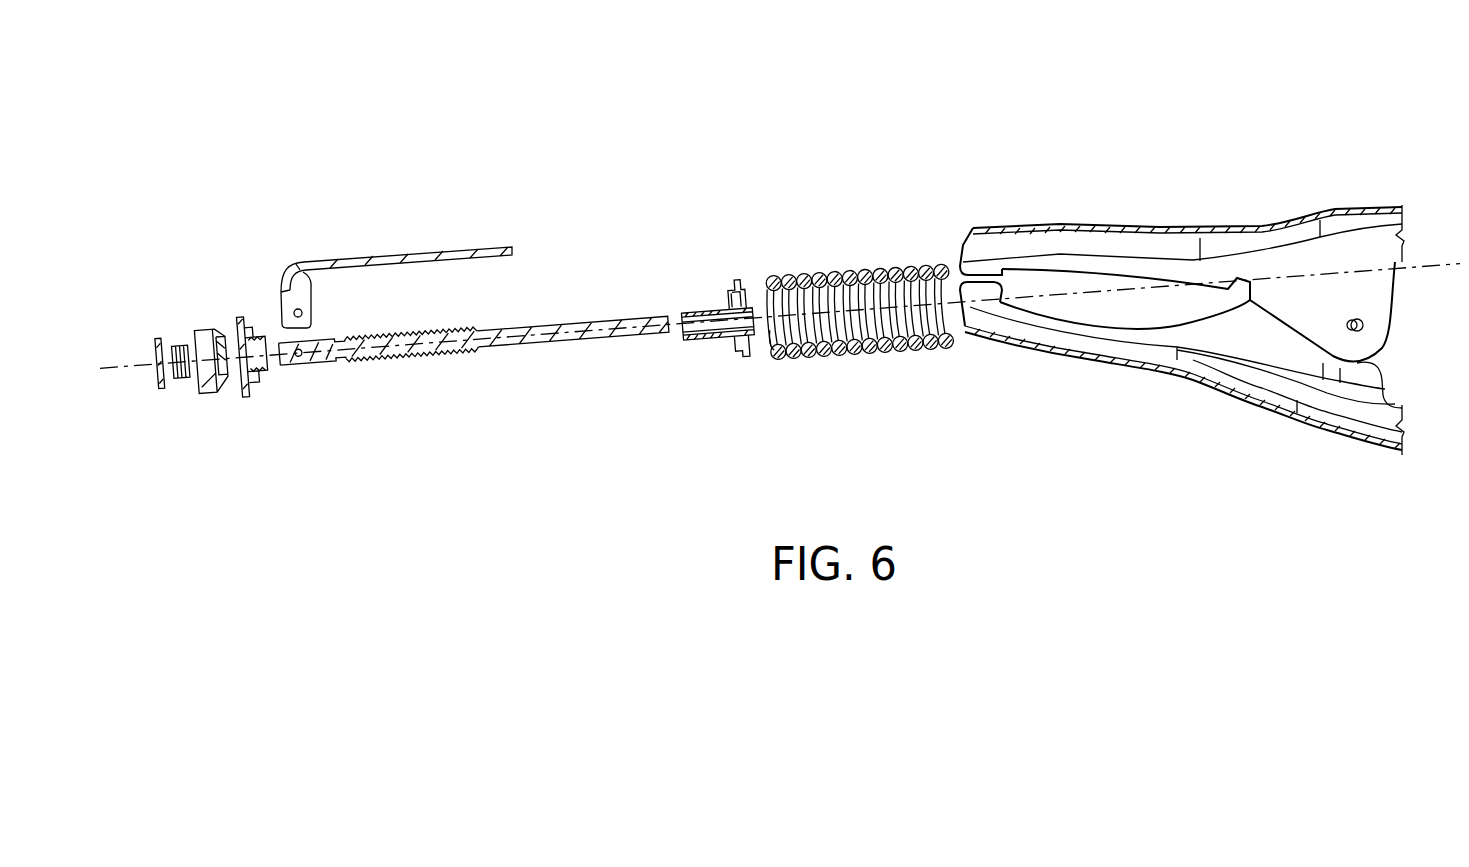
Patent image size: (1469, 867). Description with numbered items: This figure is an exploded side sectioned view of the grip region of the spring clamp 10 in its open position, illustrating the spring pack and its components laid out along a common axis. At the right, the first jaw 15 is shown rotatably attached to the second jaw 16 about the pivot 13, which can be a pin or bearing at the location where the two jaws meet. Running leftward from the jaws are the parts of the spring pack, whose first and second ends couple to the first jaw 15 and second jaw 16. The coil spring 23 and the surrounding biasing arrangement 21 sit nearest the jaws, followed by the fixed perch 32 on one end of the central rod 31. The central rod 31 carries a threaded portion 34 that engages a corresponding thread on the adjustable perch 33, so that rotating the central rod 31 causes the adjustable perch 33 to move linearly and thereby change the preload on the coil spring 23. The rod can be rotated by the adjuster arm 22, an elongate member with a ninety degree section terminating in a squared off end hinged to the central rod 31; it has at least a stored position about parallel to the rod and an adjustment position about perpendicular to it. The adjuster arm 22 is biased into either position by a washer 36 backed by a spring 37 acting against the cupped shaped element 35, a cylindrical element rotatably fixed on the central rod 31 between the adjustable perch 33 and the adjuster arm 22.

The spring clamp 10 is at (1267, 80).
The pivot 13 is at (1366, 321).
The first jaw 15 is at (1397, 261).
The second jaw 16 is at (1383, 383).
The biasing assembly 21 is at (859, 261).
The adjuster arm 22 is at (398, 254).
The coil spring 23 is at (869, 268).
The central rod 31 is at (622, 318).
The fixed perch 32 is at (750, 352).
The adjustable perch 33 is at (249, 403).
The threaded portion 34 is at (362, 332).
The cupped shaped element 35 is at (209, 327).
The washer 36 is at (152, 347).
The spring 37 is at (997, 312).